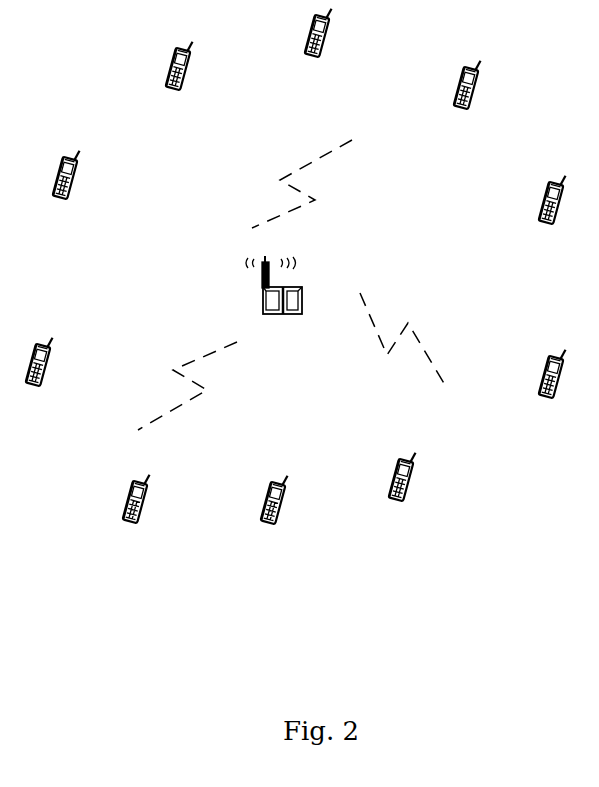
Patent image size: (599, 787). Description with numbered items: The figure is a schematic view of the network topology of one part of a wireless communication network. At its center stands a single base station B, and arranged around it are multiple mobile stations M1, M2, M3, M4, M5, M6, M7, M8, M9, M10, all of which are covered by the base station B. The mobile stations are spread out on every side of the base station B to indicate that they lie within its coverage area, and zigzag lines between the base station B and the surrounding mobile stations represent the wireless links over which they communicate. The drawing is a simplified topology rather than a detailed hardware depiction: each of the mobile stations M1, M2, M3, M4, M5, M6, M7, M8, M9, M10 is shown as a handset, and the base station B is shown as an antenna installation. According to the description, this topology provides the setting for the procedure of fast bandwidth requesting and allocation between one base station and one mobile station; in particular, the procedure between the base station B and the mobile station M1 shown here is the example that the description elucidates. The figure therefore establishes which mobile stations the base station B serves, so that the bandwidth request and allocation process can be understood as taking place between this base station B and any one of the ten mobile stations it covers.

The mobile station M1 is at (135, 515).
The mobile station M2 is at (280, 515).
The mobile station M3 is at (408, 489).
The mobile station M4 is at (558, 386).
The mobile station M5 is at (558, 212).
The mobile station M6 is at (473, 97).
The mobile station M7 is at (323, 45).
The mobile station M8 is at (183, 79).
The mobile station M9 is at (72, 187).
The mobile station M10 is at (47, 375).
The base station B is at (274, 303).